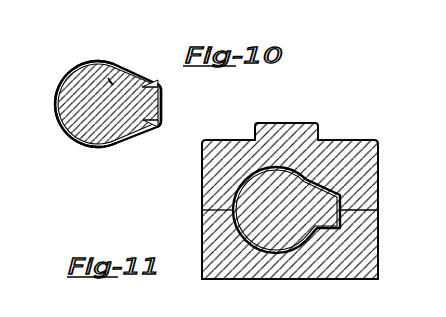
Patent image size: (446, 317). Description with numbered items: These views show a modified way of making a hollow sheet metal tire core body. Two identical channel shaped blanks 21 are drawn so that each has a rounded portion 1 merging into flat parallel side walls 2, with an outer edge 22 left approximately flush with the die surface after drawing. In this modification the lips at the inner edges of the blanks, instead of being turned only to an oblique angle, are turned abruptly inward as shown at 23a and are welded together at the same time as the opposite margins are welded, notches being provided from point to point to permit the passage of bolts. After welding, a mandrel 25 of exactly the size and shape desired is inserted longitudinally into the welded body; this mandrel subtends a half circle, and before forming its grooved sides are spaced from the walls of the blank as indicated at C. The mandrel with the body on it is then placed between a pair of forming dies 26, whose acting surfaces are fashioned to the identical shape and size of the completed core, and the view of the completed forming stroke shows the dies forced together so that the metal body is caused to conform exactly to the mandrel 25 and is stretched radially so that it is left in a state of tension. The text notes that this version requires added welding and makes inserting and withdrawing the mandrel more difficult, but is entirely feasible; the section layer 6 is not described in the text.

In FIG. 11, the rounded portion 1 is at (237, 195).
In FIG. 11, the flat parallel side walls 2 is at (333, 188).
In FIG. 11, the lower housing part 6 is at (378, 230).
In FIG. 11, the forming dies 26 is at (378, 157).
In FIG. 10, the mandrel 25 is at (110, 82).
In FIG. 11, the mandrel 25 is at (277, 187).
In FIG. 10, the channel shaped blank 21 is at (97, 62).
In FIG. 10, the outer edge 22 is at (57, 103).
In FIG. 10, the abruptly inturned lips 23a is at (163, 102).
In FIG. 11, the spacing between mandrel and blank walls C is at (350, 143).